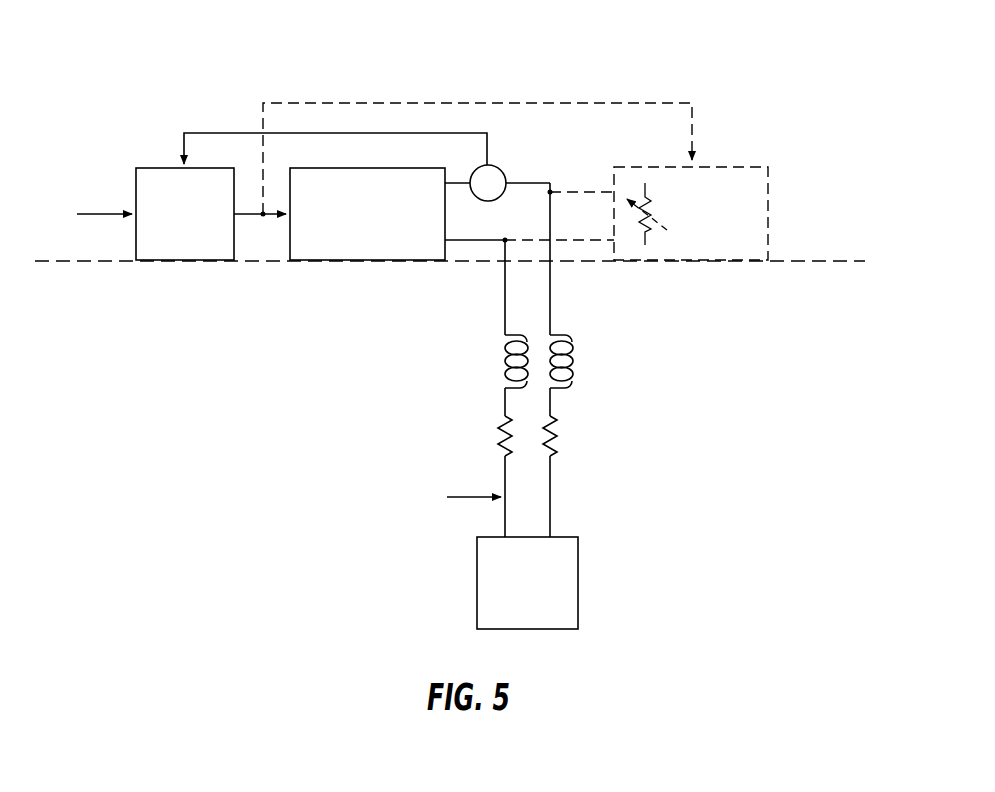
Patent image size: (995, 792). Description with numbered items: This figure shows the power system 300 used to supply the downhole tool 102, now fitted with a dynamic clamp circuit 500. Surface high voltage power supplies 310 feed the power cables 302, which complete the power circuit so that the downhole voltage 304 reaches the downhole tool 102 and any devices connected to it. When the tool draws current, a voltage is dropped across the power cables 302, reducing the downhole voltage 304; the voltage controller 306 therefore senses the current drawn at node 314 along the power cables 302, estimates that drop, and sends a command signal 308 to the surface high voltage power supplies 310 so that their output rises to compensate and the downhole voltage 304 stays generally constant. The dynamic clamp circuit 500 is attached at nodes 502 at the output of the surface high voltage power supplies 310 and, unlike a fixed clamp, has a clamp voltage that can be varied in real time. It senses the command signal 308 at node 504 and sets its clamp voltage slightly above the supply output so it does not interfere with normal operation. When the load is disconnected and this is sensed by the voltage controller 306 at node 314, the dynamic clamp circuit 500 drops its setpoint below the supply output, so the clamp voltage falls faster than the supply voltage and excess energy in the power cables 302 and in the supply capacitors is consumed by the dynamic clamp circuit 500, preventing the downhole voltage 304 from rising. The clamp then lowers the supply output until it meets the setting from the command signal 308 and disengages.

The power system 300 is at (131, 64).
The voltage controller 306 is at (205, 228).
The surface high voltage power supplies 310 is at (391, 228).
The command signal 308 is at (252, 216).
The node 504 is at (263, 216).
The node 314 is at (490, 163).
The power cables 302 is at (505, 287).
The nodes 502 is at (505, 240).
The dynamic clamp circuit 500 is at (713, 228).
The downhole voltage 304 is at (480, 496).
The downhole tool 102 is at (548, 595).